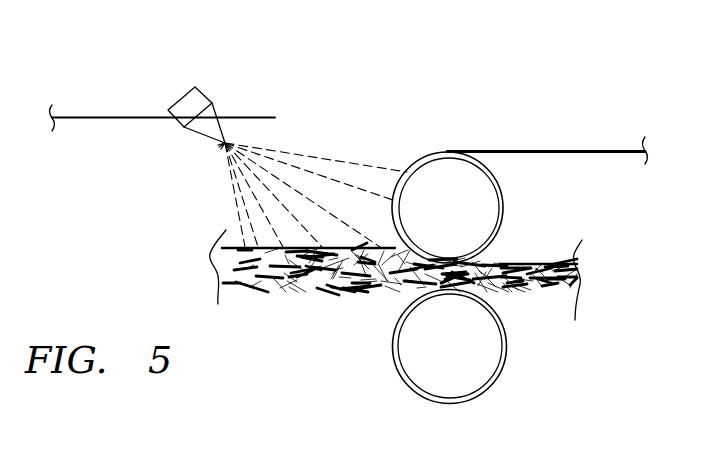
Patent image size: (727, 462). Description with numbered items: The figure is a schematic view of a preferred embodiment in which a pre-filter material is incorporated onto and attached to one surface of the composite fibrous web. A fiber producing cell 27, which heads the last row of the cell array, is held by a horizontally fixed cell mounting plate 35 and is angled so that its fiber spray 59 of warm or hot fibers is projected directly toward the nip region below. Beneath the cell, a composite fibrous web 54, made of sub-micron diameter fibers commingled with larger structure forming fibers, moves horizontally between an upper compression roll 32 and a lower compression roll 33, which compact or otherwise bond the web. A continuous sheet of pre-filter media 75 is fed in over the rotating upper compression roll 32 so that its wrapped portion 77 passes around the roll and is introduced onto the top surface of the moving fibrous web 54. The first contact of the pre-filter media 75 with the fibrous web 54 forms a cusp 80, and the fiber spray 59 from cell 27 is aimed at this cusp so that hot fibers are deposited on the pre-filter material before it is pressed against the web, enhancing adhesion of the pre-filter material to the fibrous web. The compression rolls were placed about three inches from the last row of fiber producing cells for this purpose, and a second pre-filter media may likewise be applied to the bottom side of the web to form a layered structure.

The fiber producing cell 27 is at (180, 98).
The cell mounting plate 35 is at (245, 117).
The spray of binder 59 is at (322, 160).
The roller surface 77 is at (413, 162).
The compression roll 32 is at (450, 168).
The pre-filter media 75 is at (595, 150).
The composite fibrous web 54 is at (382, 290).
The cusp 80 is at (357, 290).
The compression roll 33 is at (480, 348).